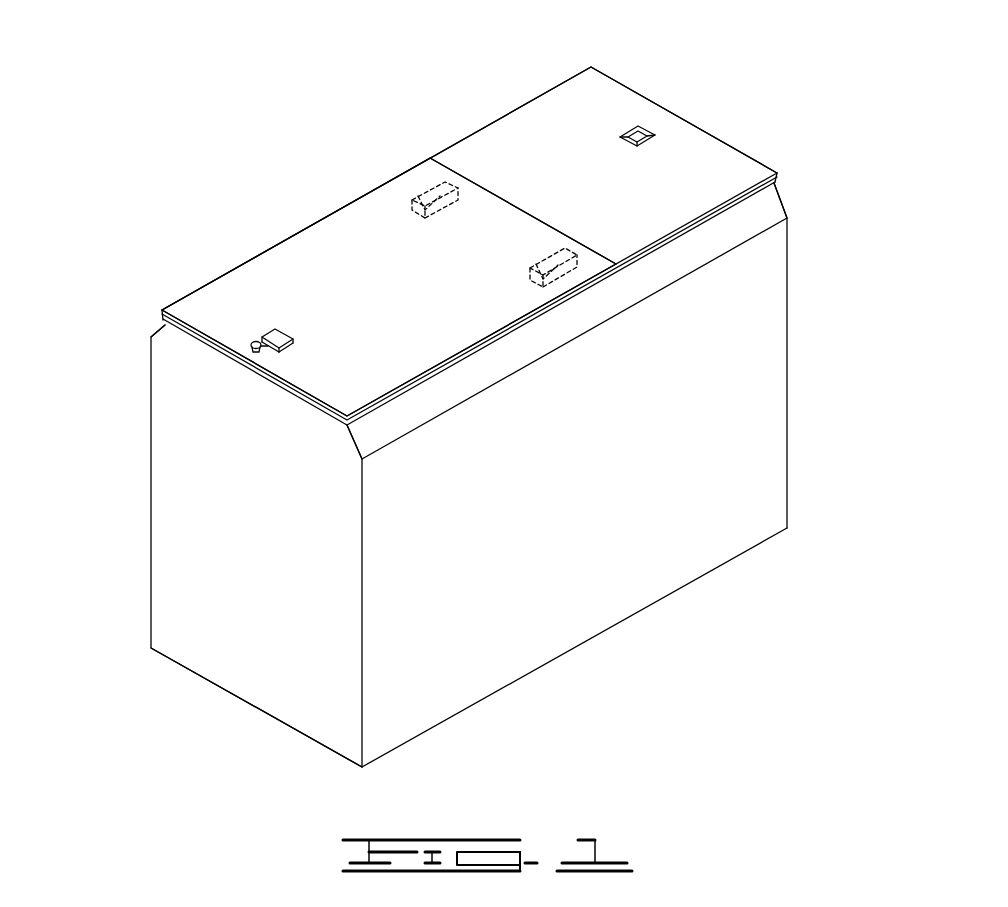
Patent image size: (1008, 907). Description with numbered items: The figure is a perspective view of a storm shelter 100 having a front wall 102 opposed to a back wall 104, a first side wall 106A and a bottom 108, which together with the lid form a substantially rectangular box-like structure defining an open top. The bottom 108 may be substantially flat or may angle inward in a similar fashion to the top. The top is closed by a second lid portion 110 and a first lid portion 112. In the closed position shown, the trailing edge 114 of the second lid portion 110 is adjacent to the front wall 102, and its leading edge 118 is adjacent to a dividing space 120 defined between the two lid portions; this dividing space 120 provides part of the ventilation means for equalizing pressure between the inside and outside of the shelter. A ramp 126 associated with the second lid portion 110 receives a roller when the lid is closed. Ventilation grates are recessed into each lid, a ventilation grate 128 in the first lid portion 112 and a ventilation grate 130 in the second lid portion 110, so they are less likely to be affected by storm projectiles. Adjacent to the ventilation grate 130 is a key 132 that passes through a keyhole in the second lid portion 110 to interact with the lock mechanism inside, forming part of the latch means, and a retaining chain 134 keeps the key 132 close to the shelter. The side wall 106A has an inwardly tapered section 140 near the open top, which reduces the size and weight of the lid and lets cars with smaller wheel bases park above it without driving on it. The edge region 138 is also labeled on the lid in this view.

The shelter 100 is at (255, 60).
The front wall 102 is at (163, 546).
The back wall 104 is at (788, 343).
The first side wall 106A is at (752, 455).
The bottom 108 is at (480, 702).
The second lid portion 110 is at (275, 263).
The first lid portion 112 is at (560, 94).
The trailing edge 114 is at (160, 312).
The leading edge 118 is at (430, 167).
The dividing space 120 is at (515, 203).
The ramp 126 is at (420, 193).
The ventilation grate 128 is at (630, 124).
The ventilation grate 130 is at (266, 338).
The key 132 is at (238, 358).
The retaining chain 134 is at (260, 353).
The cover rear edge 138 is at (705, 130).
The inwardly tapered section 140 is at (767, 212).